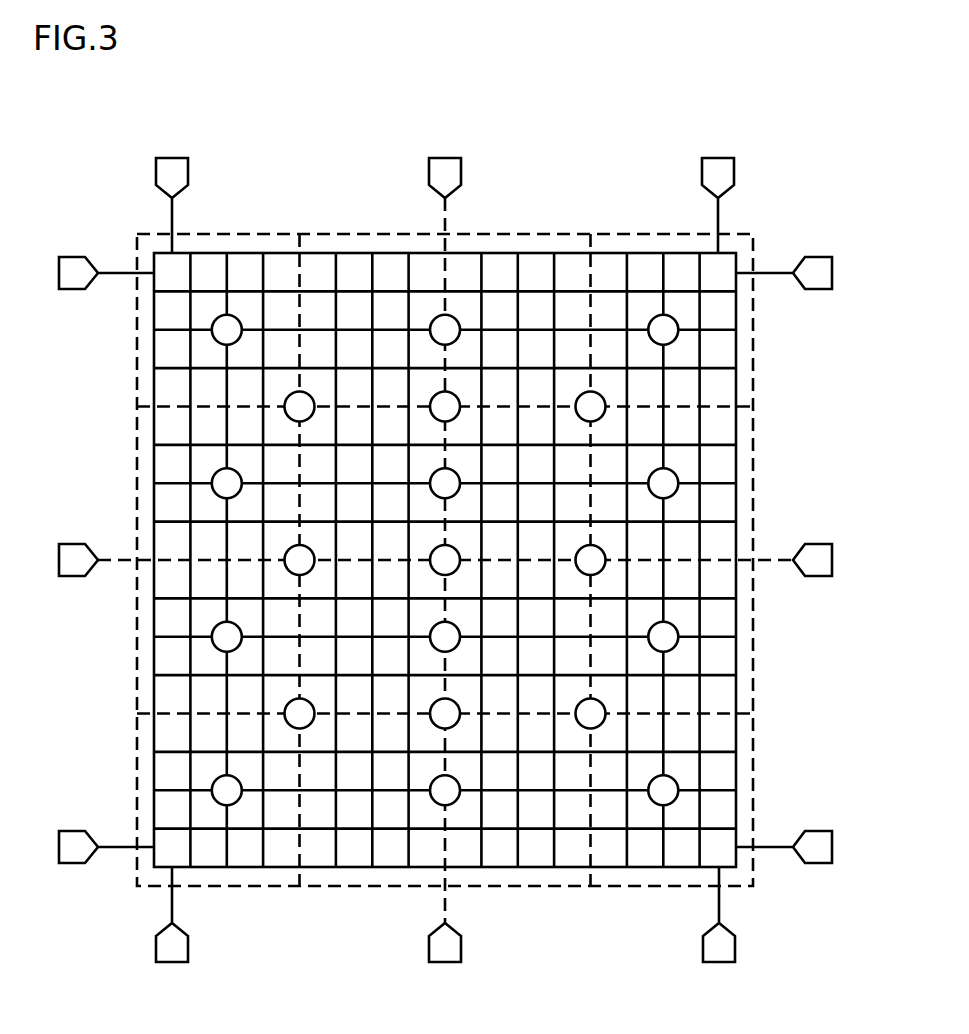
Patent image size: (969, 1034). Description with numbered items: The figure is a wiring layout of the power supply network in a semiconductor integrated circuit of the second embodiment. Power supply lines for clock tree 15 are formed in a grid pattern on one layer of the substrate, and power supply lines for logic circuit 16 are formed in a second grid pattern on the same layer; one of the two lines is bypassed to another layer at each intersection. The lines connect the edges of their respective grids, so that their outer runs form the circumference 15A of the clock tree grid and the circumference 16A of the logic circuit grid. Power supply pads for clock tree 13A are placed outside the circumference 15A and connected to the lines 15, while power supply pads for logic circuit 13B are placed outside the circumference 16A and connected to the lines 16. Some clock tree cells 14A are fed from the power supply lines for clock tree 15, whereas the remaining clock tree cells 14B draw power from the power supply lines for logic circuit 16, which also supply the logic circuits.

The power supply pad for clock tree 13A is at (445, 158).
The power supply pad for logic circuit 13B is at (172, 158).
The parts of the clock tree cells 14A is at (437, 316).
The residuals of the clock tree cells 14B is at (212, 476).
The power supply line for clock tree 15 is at (590, 280).
The circumference of the power supply lines for clock tree 15A is at (666, 233).
The power supply line for logic circuit 16 is at (500, 292).
The circumference of the power supply lines for logic circuit 16A is at (538, 253).